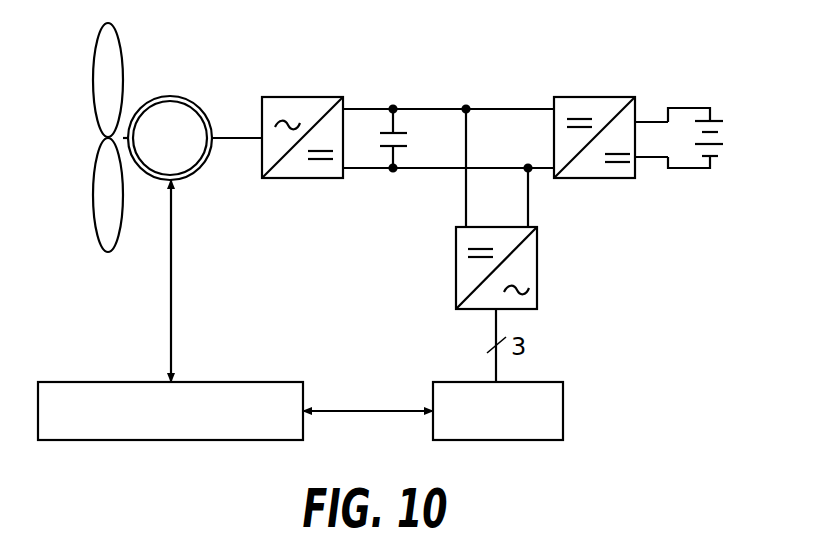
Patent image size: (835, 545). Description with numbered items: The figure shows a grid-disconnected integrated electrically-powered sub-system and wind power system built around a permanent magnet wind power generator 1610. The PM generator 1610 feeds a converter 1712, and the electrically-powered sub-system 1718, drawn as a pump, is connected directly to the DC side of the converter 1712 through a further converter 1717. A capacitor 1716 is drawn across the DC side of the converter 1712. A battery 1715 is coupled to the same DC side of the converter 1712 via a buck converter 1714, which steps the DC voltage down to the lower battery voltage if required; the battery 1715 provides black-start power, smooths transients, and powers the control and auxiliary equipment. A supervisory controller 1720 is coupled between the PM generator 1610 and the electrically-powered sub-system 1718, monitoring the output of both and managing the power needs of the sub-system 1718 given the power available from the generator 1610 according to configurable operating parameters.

The PM wind power generator 1610 is at (170, 96).
The converter 1712 is at (301, 96).
The buck converter 1714 is at (592, 96).
The battery 1715 is at (716, 117).
The DC link capacitor 1716 is at (404, 131).
The converter 1717 is at (540, 270).
The electrically-powered sub-system 1718 is at (565, 412).
The supervisory controller 1720 is at (228, 381).